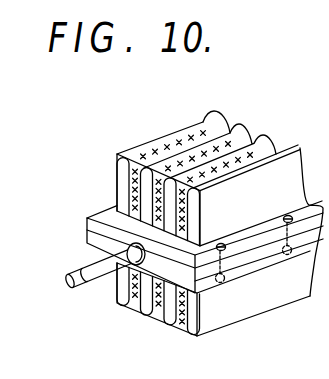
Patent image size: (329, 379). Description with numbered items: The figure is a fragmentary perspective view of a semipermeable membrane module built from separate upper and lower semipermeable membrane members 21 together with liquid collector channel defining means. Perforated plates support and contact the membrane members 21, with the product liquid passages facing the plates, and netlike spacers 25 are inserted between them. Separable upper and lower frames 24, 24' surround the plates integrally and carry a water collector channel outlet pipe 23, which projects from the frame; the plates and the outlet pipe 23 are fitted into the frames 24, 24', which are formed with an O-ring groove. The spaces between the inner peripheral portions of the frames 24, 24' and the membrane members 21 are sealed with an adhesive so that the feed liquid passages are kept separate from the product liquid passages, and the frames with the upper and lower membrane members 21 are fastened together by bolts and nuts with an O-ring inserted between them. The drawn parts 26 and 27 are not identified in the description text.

The semipermeable membrane member 21 is at (125, 209).
The water collector channel outlet pipe 23 is at (99, 277).
The upper frame 24 is at (179, 225).
The lower frame 24' is at (167, 258).
The netlike spacer 25 is at (203, 122).
The stitched layer 26 is at (118, 210).
The top strip 27 is at (167, 130).